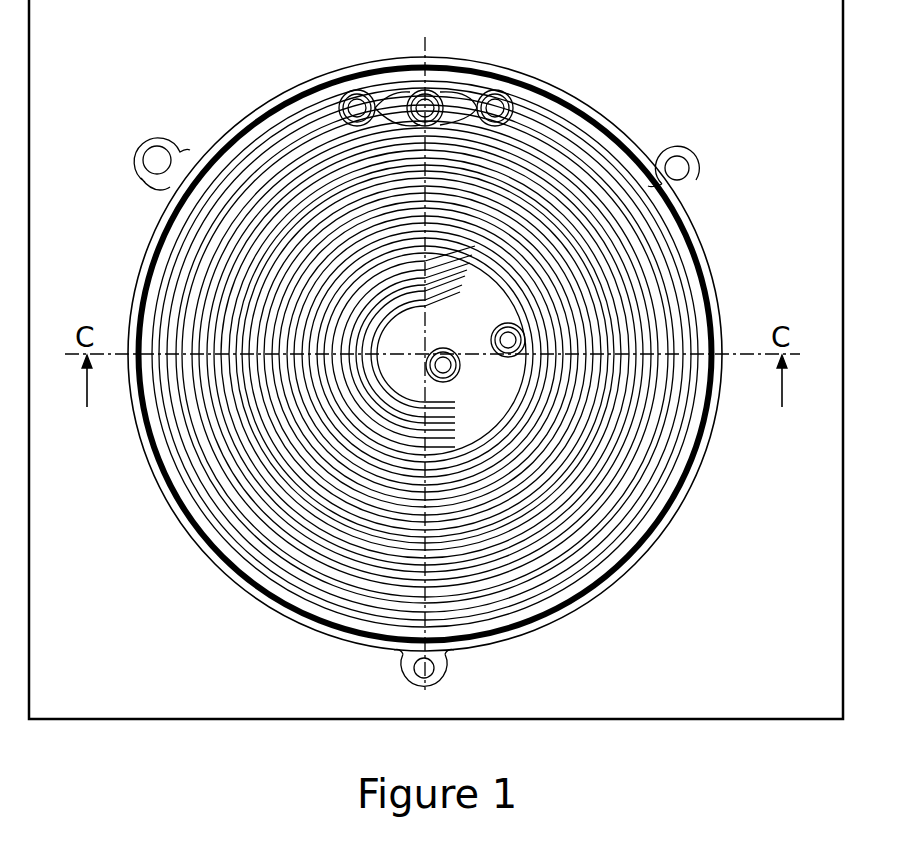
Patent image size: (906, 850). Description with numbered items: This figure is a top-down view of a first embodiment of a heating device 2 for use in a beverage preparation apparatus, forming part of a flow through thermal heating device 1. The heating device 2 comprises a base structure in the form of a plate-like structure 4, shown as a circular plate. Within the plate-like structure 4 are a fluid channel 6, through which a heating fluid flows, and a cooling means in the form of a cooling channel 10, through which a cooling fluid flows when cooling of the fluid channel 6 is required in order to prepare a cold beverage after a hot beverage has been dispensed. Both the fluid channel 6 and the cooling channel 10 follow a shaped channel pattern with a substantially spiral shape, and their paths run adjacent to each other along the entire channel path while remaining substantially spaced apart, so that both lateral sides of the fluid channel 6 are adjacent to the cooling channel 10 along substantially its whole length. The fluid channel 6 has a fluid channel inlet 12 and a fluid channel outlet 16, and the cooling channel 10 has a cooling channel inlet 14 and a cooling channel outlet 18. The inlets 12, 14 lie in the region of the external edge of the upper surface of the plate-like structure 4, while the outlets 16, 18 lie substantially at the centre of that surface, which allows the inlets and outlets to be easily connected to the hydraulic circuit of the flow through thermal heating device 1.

The flow through thermal heating device 1 is at (758, 742).
The heating device 2 is at (183, 552).
The plate-like structure 4 is at (545, 106).
The fluid channel 6 is at (321, 155).
The cooling channel 10 is at (297, 135).
The fluid channel inlet 12 is at (440, 97).
The cooling channel inlet 14 is at (370, 93).
The fluid channel outlet 16 is at (455, 377).
The cooling channel outlet 18 is at (522, 336).